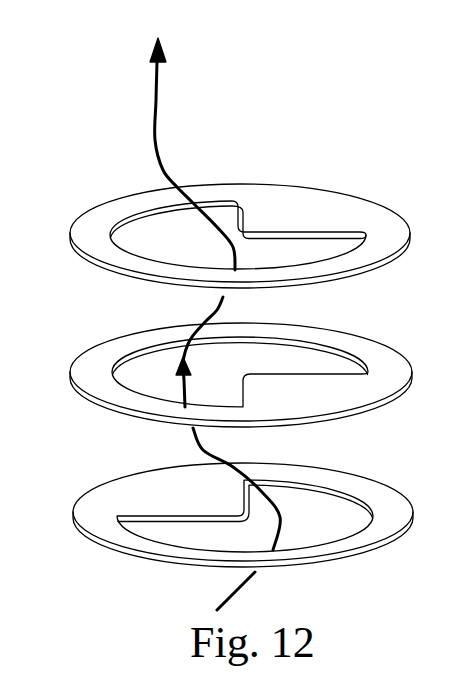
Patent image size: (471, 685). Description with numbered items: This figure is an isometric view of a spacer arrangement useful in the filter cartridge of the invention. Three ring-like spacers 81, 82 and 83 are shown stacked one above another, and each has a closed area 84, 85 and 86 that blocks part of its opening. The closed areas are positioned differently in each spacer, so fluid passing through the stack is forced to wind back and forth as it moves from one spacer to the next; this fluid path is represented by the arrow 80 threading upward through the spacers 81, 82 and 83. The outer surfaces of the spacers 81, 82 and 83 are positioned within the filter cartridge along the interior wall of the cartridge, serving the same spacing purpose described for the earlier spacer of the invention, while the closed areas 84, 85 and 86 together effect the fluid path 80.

The arrow 80 is at (153, 127).
The spacer 81 is at (240, 200).
The spacer 82 is at (241, 378).
The spacer 83 is at (227, 509).
The closed area 84 is at (310, 205).
The closed area 85 is at (300, 410).
The closed area 86 is at (180, 493).